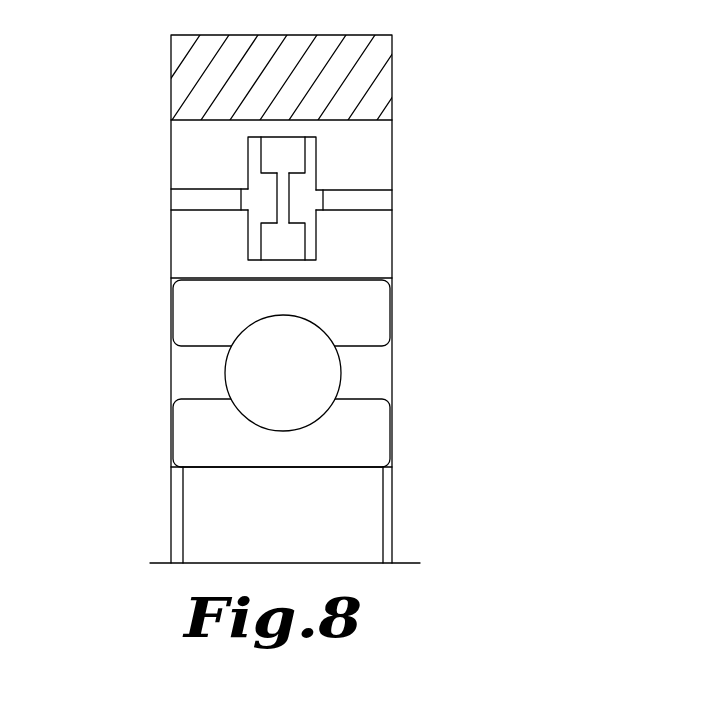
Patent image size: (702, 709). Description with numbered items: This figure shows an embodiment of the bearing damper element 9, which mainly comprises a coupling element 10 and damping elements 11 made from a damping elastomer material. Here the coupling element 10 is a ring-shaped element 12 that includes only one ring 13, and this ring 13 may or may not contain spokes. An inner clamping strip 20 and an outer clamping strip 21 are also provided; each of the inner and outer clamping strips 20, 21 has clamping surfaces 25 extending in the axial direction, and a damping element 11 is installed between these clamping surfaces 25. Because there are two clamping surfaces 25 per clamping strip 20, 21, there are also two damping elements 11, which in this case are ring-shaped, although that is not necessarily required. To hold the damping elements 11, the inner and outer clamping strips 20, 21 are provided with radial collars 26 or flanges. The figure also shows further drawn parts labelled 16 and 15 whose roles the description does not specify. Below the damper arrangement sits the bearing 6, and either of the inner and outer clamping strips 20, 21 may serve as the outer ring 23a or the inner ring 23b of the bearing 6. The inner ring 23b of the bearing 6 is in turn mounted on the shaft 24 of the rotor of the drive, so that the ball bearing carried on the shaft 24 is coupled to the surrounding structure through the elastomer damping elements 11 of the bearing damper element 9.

The bearing damper element 9 is at (103, 100).
The outer clamping strip 21 is at (384, 130).
The radial collars 26 is at (207, 150).
The clamping surface 25 is at (207, 203).
The damping element 11 is at (187, 199).
The head of fastener 16 is at (306, 151).
The ring 13 is at (290, 195).
The foot of fastener 15 is at (307, 256).
The ring-shaped element 12 is at (460, 171).
The coupling element 10 is at (404, 207).
The inner clamping strip 20 is at (372, 262).
The bearing 6 is at (448, 369).
The outer ring 23a is at (373, 313).
The inner ring 23b is at (375, 437).
The shaft 24 is at (352, 500).